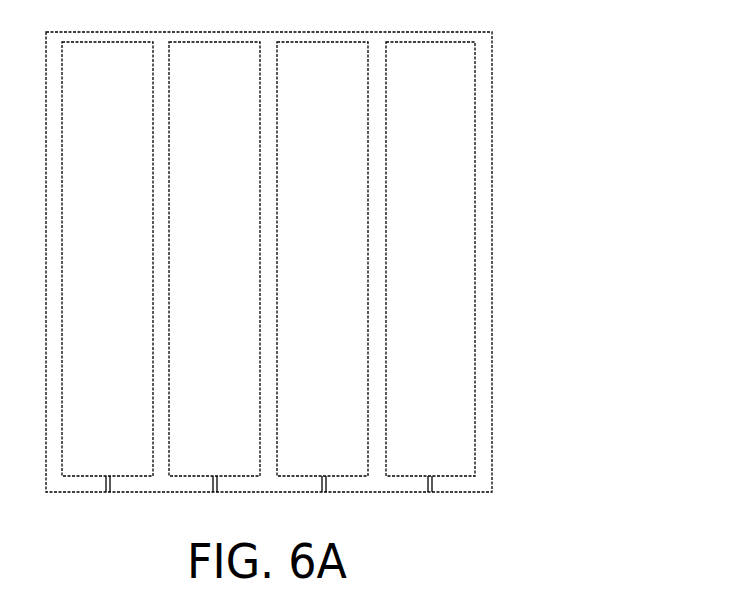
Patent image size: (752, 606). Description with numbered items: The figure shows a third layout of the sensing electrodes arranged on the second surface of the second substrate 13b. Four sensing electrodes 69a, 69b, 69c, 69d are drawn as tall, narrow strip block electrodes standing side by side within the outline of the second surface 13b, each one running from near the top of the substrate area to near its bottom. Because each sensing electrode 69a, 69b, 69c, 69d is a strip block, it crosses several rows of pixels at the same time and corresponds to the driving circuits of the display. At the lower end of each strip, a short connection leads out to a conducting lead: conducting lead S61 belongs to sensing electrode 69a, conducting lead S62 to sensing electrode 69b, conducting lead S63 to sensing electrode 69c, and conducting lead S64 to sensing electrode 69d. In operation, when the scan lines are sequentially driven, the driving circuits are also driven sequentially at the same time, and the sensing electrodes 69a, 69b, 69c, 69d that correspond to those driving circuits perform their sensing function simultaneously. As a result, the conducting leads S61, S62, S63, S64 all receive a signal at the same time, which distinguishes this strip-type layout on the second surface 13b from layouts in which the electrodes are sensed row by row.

The second surface of the second substrate 13b is at (601, 32).
The sensing electrode 69a is at (86, 82).
The sensing electrode 69b is at (193, 82).
The sensing electrode 69c is at (301, 82).
The sensing electrode 69d is at (408, 82).
The conducting lead S61 is at (108, 500).
The conducting lead S62 is at (215, 500).
The conducting lead S63 is at (323, 500).
The conducting lead S64 is at (431, 500).